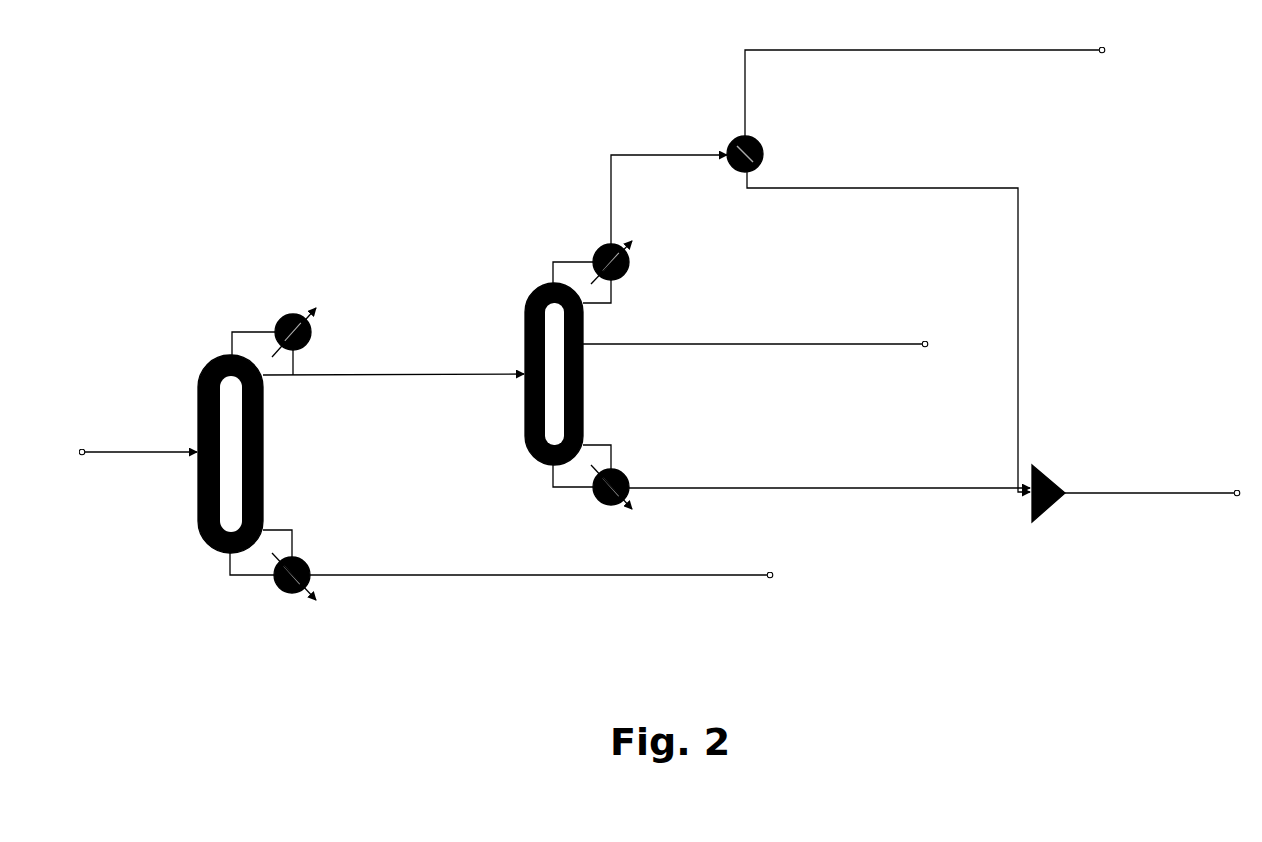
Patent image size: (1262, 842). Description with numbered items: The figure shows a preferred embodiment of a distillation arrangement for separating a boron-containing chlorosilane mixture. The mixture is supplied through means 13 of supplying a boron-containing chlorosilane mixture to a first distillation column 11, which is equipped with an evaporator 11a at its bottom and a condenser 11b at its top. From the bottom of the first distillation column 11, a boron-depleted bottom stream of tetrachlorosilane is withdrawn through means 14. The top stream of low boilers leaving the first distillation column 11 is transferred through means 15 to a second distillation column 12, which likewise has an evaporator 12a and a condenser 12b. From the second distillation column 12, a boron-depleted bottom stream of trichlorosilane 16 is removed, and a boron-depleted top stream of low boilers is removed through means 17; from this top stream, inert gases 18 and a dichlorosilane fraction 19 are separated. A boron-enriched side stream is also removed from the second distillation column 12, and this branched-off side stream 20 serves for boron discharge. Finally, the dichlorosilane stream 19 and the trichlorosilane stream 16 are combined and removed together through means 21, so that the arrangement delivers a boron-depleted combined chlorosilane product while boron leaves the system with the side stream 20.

The first distillation column 11 is at (195, 358).
The evaporator 11a is at (315, 560).
The condenser 11b is at (305, 305).
The second distillation column 12 is at (522, 290).
The evaporator 12a is at (625, 470).
The condenser 12b is at (640, 255).
The means of supplying a boron-containing chlorosilane mixture 13 is at (143, 448).
The means of removing a boron-depleted bottom stream of tetrachlorosilane 14 is at (542, 567).
The means of transferring a top stream of low boilers 15 is at (393, 363).
The trichlorosilane stream 16 is at (823, 482).
The means of removing a boron-depleted top stream of low boilers 17 is at (630, 135).
The inert gases 18 is at (903, 57).
The dichlorosilane fraction 19 is at (1025, 350).
The branched-off side stream 20 is at (790, 337).
The means of removing the combined dichlorosilane streams and trichlorosilane stream 21 is at (1138, 500).